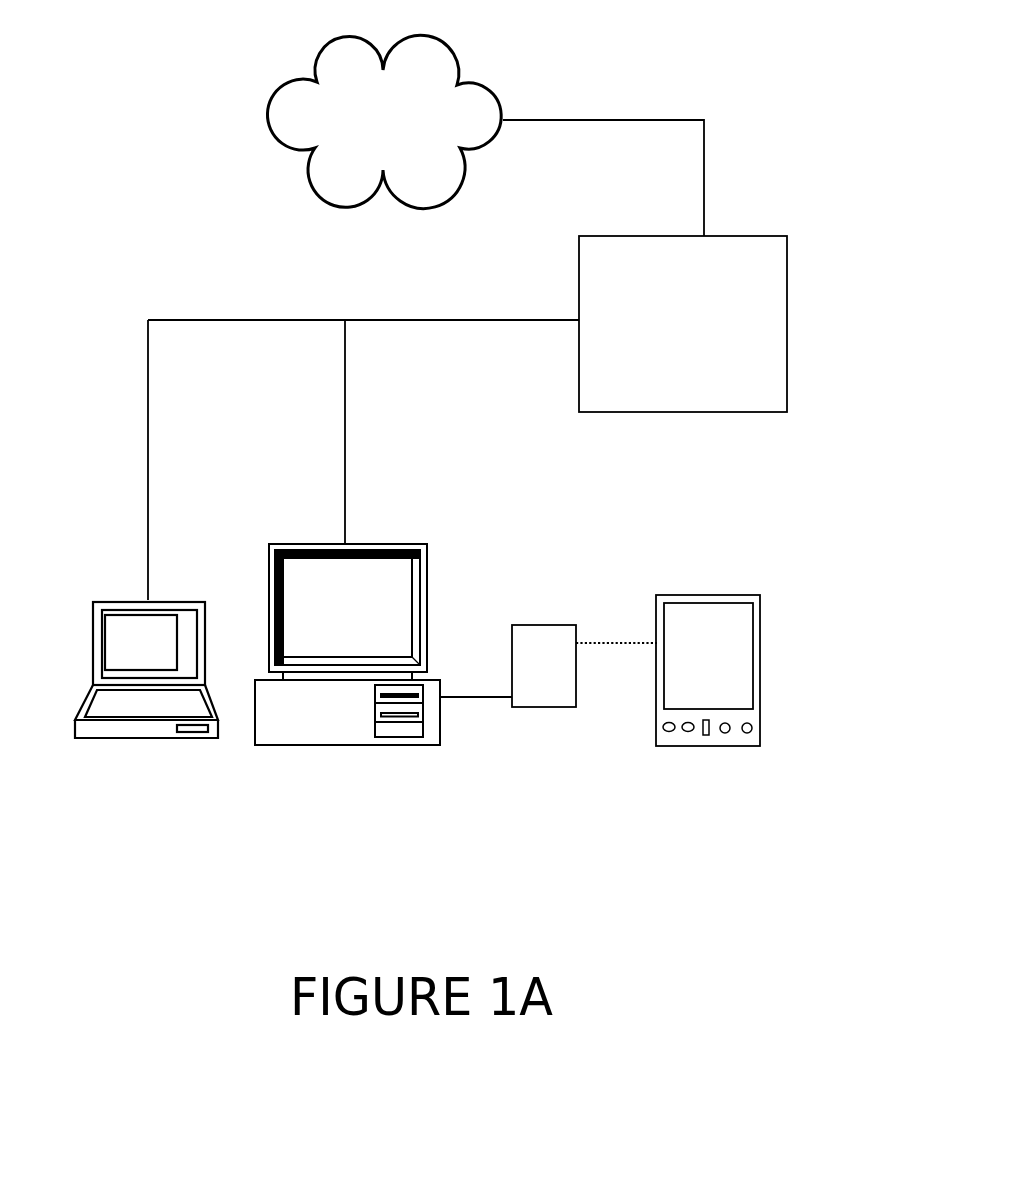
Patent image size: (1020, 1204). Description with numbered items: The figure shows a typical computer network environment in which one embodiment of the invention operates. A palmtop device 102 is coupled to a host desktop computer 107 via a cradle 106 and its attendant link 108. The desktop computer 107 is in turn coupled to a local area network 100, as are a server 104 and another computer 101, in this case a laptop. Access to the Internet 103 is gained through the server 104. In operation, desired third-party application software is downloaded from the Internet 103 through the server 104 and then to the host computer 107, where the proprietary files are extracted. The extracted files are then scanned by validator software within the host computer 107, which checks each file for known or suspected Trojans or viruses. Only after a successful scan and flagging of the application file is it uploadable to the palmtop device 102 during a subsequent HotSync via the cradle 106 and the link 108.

The local area network 100 is at (202, 318).
The laptop computer 101 is at (130, 640).
The palmtop device 102 is at (762, 633).
The Internet 103 is at (275, 102).
The server 104 is at (763, 280).
The cradle 106 is at (532, 625).
The host desktop computer 107 is at (370, 610).
The link 108 is at (617, 643).